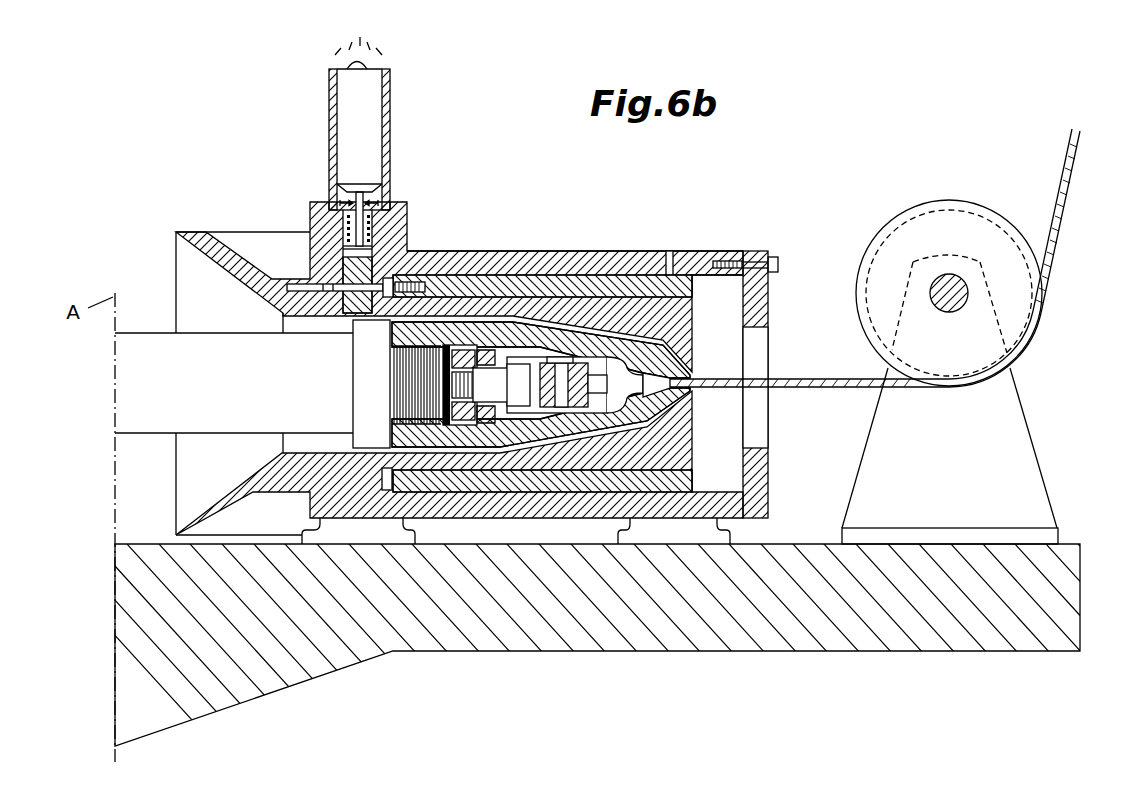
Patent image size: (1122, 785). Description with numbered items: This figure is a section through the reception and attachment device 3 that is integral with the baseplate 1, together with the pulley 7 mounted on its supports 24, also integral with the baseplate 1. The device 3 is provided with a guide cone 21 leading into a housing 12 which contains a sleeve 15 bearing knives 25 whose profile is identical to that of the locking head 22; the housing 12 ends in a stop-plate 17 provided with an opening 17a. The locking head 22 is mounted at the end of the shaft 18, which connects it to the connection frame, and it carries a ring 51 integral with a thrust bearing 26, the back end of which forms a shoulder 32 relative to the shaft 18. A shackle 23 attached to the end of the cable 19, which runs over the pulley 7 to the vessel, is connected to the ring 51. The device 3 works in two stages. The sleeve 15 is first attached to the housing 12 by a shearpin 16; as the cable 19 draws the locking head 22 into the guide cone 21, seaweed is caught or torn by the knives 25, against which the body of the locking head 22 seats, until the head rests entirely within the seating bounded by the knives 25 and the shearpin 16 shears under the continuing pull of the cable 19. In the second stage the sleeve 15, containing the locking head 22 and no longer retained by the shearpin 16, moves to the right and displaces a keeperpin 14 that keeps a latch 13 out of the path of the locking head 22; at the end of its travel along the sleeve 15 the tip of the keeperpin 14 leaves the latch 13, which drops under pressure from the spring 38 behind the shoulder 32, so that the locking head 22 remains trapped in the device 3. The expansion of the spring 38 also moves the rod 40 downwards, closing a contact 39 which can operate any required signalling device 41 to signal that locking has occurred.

The baseplate 1 is at (473, 621).
The reception and attachment device 3 is at (272, 221).
The pulley 7 is at (903, 218).
The housing 12 is at (512, 262).
The latch 13 is at (408, 246).
The keeperpin 14 is at (340, 292).
The sleeve 15 is at (640, 262).
The shearpin 16 is at (680, 253).
The stop-plate 17 is at (762, 290).
The opening 17a is at (757, 327).
The shaft 18 is at (155, 412).
The cable 19 is at (792, 390).
The guide cone 21 is at (217, 265).
The locking head 22 is at (518, 440).
The shackle 23 is at (613, 400).
The supports 24 is at (997, 397).
The knives 25 is at (658, 326).
The thrust bearing 26 is at (480, 413).
The shoulder 32 is at (375, 392).
The spring 38 is at (373, 230).
The contact 39 is at (372, 188).
The rod 40 is at (360, 232).
The signalling device 41 is at (345, 167).
The ring 51 is at (518, 373).